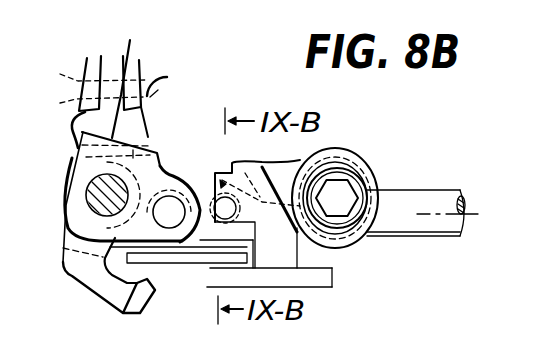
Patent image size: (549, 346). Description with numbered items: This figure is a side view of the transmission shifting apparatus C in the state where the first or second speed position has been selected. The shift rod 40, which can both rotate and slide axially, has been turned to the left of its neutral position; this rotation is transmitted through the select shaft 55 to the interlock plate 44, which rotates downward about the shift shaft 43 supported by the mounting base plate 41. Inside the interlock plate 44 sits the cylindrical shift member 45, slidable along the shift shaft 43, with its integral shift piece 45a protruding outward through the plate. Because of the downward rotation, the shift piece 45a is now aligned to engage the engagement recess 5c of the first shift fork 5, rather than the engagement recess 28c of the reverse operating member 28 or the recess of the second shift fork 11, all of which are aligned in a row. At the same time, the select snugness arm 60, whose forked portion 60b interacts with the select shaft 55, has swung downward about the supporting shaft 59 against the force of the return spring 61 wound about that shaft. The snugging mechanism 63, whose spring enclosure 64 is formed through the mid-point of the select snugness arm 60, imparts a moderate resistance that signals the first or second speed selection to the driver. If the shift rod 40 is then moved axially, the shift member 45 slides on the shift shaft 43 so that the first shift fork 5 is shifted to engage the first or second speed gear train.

The second shift fork 11 is at (112, 62).
The operating member 28 is at (68, 82).
The engagement recess 28c is at (83, 108).
The first shift fork 5 is at (146, 74).
The engagement recess 5c is at (168, 91).
The transmission shifting apparatus C is at (203, 91).
The shift piece 45a is at (137, 130).
The interlock plate 44 is at (82, 152).
The shift member 45 is at (73, 198).
The shift shaft 43 is at (90, 200).
The select shaft 55 is at (169, 218).
The select snugness arm 60 is at (175, 184).
The snugging mechanism 63 is at (216, 168).
The spring enclosure 64 is at (314, 152).
The return spring 61 is at (366, 189).
The supporting shaft 59 is at (347, 237).
The shift rod 40 is at (437, 197).
The mounting base plate 41 is at (322, 288).
The forked portion 60b is at (195, 242).